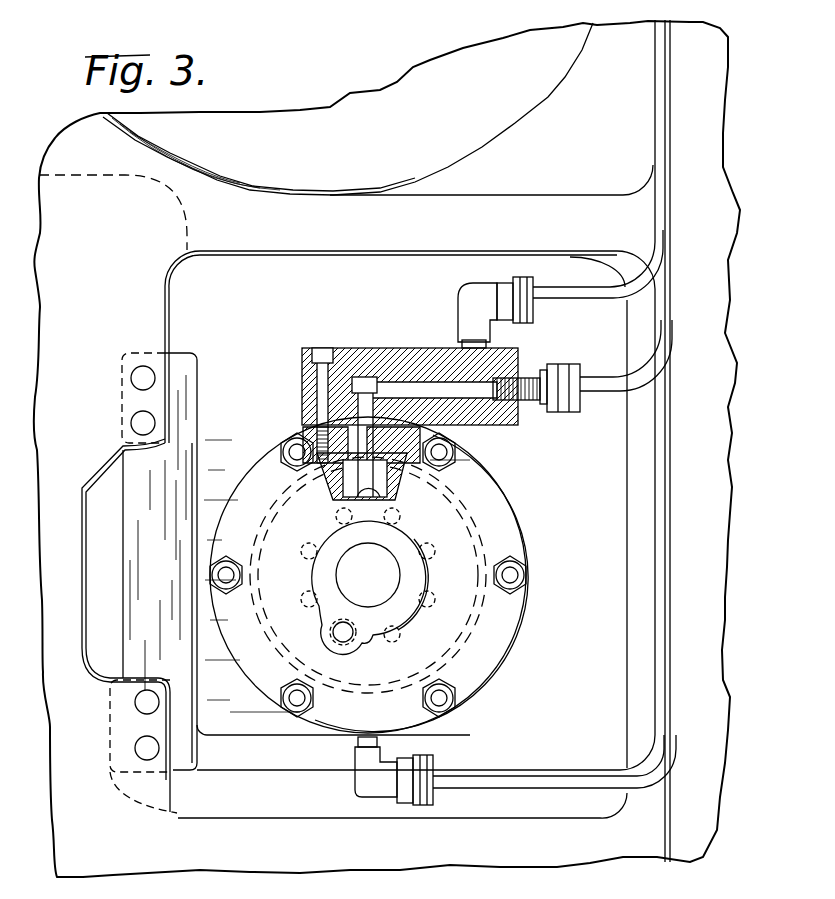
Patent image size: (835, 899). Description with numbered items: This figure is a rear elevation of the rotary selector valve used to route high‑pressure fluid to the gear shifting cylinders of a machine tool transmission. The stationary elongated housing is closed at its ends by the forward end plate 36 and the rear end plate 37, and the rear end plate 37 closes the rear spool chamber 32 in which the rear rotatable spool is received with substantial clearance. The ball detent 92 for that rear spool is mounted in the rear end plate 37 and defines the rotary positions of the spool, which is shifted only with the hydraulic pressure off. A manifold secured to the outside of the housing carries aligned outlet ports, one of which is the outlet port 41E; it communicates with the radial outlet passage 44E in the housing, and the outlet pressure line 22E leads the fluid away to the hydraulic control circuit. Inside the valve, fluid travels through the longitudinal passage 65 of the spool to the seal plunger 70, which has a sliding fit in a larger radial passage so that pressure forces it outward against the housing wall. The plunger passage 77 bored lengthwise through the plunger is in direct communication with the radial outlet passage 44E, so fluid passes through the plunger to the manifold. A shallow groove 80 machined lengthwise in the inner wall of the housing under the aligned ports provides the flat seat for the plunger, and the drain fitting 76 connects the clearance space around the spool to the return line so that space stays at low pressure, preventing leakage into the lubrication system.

The outlet port 41E is at (410, 409).
The radial outlet passage 44E is at (300, 428).
The outlet pressure line 22E is at (604, 394).
The shallow groove 80 is at (425, 447).
The seal plunger 70 is at (385, 486).
The plunger passage 77 is at (342, 503).
The longitudinal passage 65 is at (390, 512).
The ball detent 92 is at (348, 642).
The rear end plate 37 is at (498, 637).
The rear spool chamber 32 is at (473, 663).
The forward end plate 36 is at (243, 722).
The drain fitting 76 is at (360, 780).